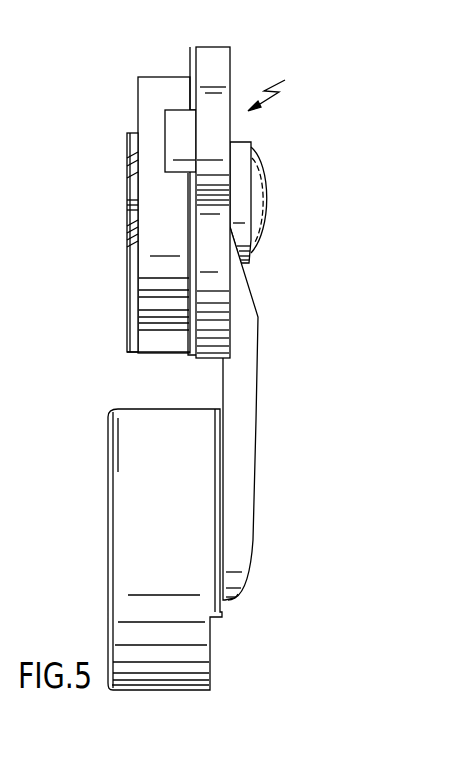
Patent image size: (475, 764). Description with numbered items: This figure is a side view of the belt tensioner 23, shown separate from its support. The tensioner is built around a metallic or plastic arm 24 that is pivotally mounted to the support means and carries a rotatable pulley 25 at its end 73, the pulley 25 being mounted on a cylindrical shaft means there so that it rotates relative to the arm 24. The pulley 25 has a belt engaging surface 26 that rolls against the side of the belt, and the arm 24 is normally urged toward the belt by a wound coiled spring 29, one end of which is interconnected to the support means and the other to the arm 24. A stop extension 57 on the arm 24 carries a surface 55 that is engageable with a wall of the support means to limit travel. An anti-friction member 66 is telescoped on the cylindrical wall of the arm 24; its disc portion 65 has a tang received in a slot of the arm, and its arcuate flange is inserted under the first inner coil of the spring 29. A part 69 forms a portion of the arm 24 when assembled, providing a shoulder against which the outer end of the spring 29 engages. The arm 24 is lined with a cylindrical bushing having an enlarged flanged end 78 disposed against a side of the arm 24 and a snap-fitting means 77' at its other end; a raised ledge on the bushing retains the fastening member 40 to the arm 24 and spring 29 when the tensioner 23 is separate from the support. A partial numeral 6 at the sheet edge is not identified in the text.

The adjacent element (cut off) 6 is at (7, 68).
The surface 55 is at (15, 188).
The belt tensioner 23 is at (285, 86).
The arm 24 is at (228, 380).
The pulley 25 is at (108, 535).
The belt engaging surface 26 is at (130, 475).
The wound coiled spring 29 is at (152, 90).
The fastening member 40 is at (265, 176).
The stop extension 57 is at (172, 128).
The disc portion 65 is at (190, 60).
The anti-friction member 66 is at (196, 47).
The part 69 is at (133, 342).
The end of the arm 73 is at (235, 598).
The snap-fitting means 77' is at (102, 242).
The enlarged flanged end 78 is at (240, 145).